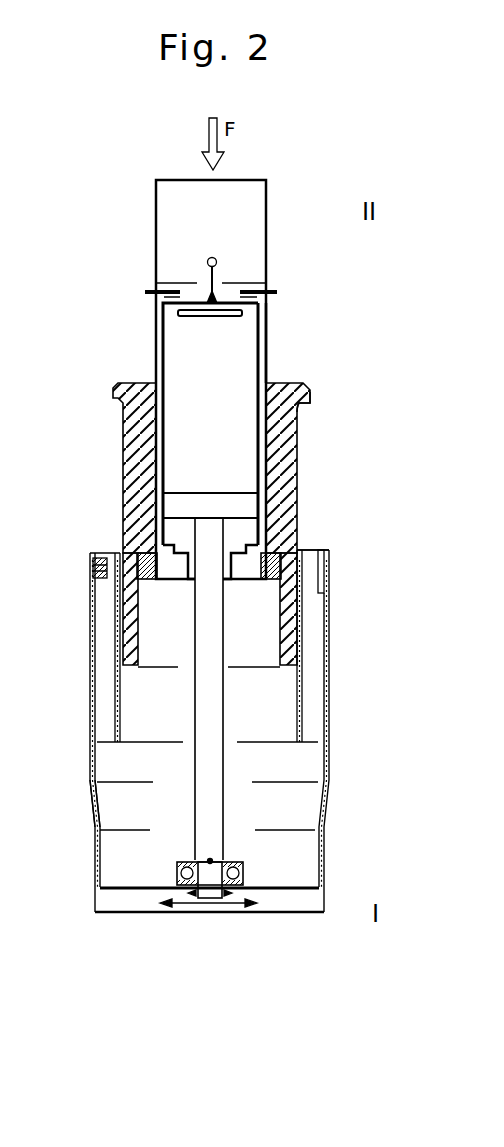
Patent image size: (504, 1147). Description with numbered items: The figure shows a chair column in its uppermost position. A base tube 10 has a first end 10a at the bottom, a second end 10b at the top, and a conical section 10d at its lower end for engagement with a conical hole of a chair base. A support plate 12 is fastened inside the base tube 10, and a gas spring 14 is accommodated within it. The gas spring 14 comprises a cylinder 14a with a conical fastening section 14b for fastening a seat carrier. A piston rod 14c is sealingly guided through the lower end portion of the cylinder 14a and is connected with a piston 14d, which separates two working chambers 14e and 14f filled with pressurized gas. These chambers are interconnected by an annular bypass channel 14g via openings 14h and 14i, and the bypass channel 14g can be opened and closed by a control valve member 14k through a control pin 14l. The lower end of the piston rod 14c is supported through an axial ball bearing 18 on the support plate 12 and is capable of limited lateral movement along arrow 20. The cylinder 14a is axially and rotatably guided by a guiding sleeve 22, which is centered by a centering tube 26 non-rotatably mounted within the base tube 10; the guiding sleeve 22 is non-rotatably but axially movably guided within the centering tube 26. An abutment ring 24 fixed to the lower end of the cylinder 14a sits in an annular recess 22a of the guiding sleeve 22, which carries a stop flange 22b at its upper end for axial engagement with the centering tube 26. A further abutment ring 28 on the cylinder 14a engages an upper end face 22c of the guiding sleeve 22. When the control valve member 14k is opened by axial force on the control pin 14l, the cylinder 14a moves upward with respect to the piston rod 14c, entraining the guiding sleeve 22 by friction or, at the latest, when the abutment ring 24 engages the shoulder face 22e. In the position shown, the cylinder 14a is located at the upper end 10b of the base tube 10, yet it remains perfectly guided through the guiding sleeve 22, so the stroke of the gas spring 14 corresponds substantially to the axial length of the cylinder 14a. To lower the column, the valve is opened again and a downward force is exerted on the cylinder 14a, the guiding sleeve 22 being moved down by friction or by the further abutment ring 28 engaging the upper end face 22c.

The base tube 10 is at (330, 640).
The first end of base tube 10a is at (322, 912).
The second end of base tube 10b is at (330, 580).
The conical section 10d is at (92, 808).
The support plate 12 is at (140, 892).
The gas spring 14 is at (272, 342).
The cylinder 14a is at (162, 313).
The conical fastening section 14b is at (270, 212).
The piston rod 14c is at (203, 777).
The piston 14d is at (218, 492).
The working chamber 14e is at (186, 400).
The working chamber 14f is at (245, 528).
The annular bypass channel 14g is at (155, 348).
The opening 14h is at (163, 530).
The opening 14i is at (186, 300).
The control valve member 14k is at (245, 328).
The control pin 14l is at (214, 258).
The axial ball bearing 18 is at (245, 866).
The arrow 20 is at (208, 906).
The guiding sleeve 22 is at (130, 462).
The annular recess 22a is at (148, 666).
The stop flange 22b is at (310, 406).
The upper end face 22c is at (284, 376).
The shoulder face 22e is at (137, 552).
The abutment ring 24 is at (118, 600).
The centering tube 26 is at (318, 550).
The further abutment ring 28 is at (280, 292).